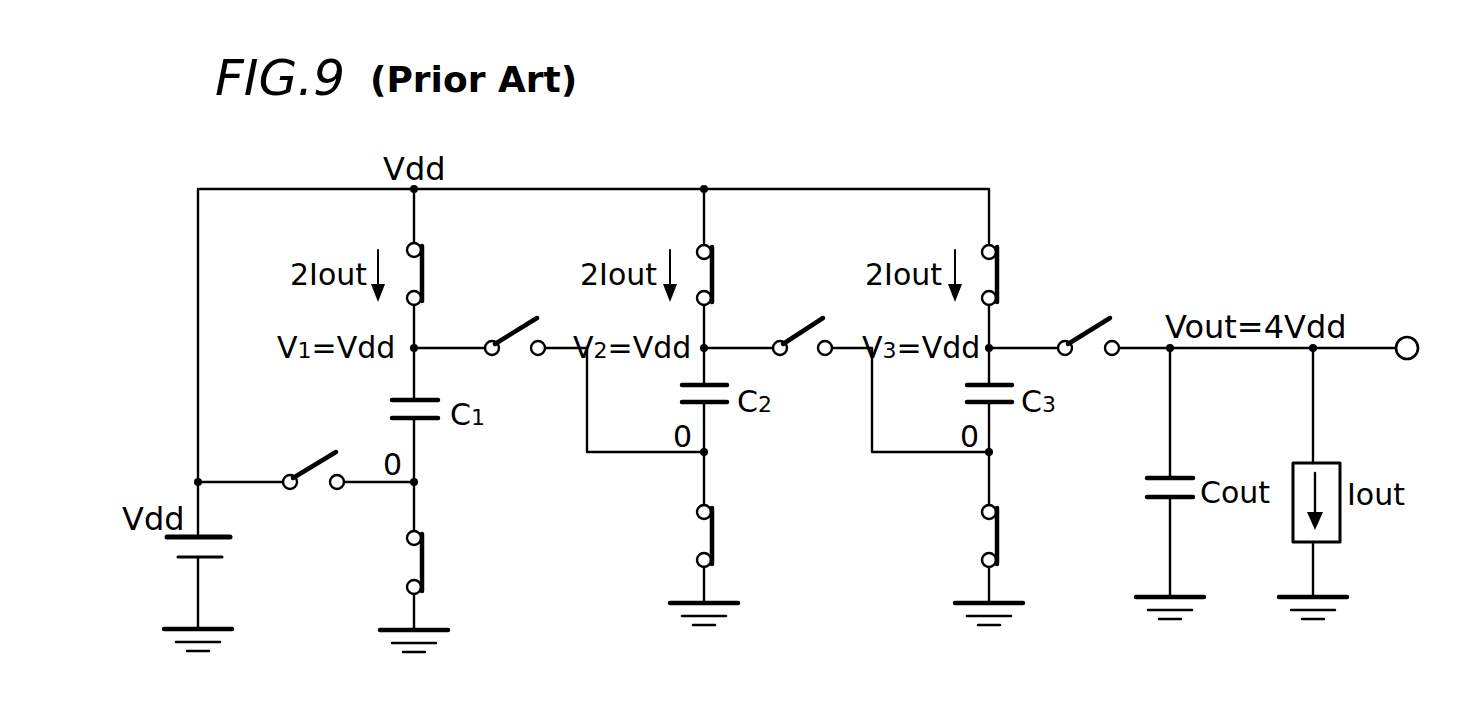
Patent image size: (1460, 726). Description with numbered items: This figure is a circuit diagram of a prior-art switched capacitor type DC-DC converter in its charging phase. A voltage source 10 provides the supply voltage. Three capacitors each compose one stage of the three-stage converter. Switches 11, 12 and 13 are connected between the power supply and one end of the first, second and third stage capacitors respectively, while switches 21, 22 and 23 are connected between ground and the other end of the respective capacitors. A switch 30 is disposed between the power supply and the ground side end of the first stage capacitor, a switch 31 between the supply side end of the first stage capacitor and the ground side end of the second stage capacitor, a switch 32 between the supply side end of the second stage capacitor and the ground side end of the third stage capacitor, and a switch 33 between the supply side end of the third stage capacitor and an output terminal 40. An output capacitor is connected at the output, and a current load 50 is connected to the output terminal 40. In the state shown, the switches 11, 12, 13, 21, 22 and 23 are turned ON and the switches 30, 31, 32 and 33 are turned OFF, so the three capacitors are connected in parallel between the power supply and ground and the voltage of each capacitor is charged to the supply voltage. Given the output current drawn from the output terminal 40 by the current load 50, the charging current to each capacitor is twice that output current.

The voltage source 10 is at (232, 553).
The switch 11 is at (432, 270).
The switch 12 is at (722, 270).
The switch 13 is at (1008, 268).
The switch 21 is at (440, 568).
The switch 22 is at (725, 540).
The switch 23 is at (1012, 538).
The switch 30 is at (312, 498).
The switch 31 is at (515, 365).
The switch 32 is at (800, 365).
The switch 33 is at (1085, 365).
The output terminal 40 is at (1405, 335).
The current load 50 is at (1350, 538).